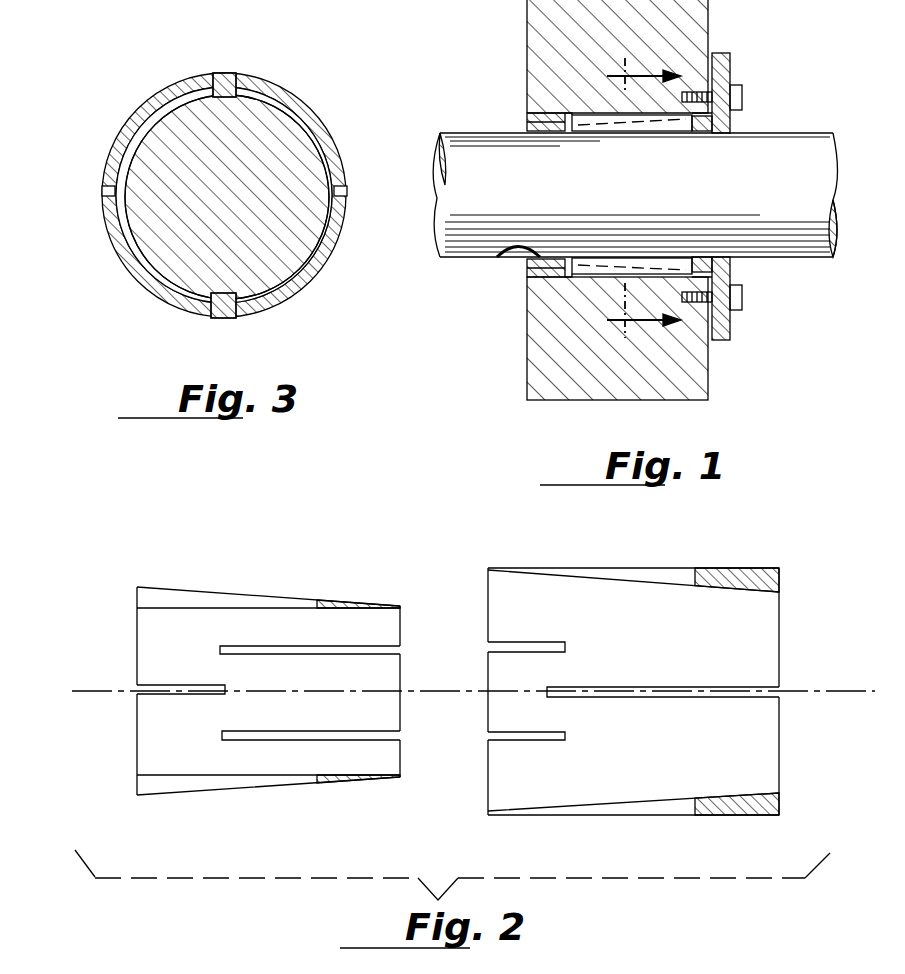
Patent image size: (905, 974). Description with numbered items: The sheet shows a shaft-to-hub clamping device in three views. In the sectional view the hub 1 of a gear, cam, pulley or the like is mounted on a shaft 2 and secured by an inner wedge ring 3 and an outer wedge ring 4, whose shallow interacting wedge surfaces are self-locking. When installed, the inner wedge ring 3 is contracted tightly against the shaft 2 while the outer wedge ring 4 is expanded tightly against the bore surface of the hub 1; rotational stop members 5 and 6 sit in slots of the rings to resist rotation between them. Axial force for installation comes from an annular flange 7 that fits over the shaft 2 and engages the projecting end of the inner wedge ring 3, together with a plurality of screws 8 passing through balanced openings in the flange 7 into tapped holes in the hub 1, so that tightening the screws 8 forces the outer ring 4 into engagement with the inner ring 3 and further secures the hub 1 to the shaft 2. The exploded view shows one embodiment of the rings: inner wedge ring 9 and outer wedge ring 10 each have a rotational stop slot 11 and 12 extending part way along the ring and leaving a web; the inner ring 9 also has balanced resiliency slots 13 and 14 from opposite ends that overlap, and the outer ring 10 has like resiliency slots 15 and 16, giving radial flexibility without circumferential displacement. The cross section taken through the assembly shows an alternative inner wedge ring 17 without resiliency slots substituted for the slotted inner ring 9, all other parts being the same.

In FIG. 1, the hub 1 is at (527, 48).
In FIG. 3, the shaft 2 is at (195, 226).
In FIG. 1, the shaft 2 is at (481, 158).
In FIG. 1, the inner wedge ring 3 is at (530, 258).
In FIG. 1, the outer wedge ring 4 is at (545, 278).
In FIG. 3, the rotational stop member 5 is at (228, 73).
In FIG. 1, the rotational stop member 5 is at (657, 131).
In FIG. 3, the rotational stop member 6 is at (228, 318).
In FIG. 1, the rotational stop member 6 is at (663, 258).
In FIG. 1, the annular flange 7 is at (724, 60).
In FIG. 1, the screws 8 is at (745, 98).
In FIG. 2, the inner wedge ring 9 is at (276, 684).
In FIG. 3, the outer wedge ring 10 is at (317, 110).
In FIG. 2, the outer wedge ring 10 is at (645, 714).
In FIG. 2, the slot 11 is at (200, 598).
In FIG. 2, the slot 12 is at (618, 808).
In FIG. 2, the resiliency slots 13 is at (163, 685).
In FIG. 2, the resiliency slots 14 is at (392, 646).
In FIG. 3, the resiliency slots 15 is at (103, 191).
In FIG. 2, the resiliency slots 15 is at (768, 688).
In FIG. 2, the resiliency slots 16 is at (500, 640).
In FIG. 3, the inner wedge ring 17 is at (305, 283).